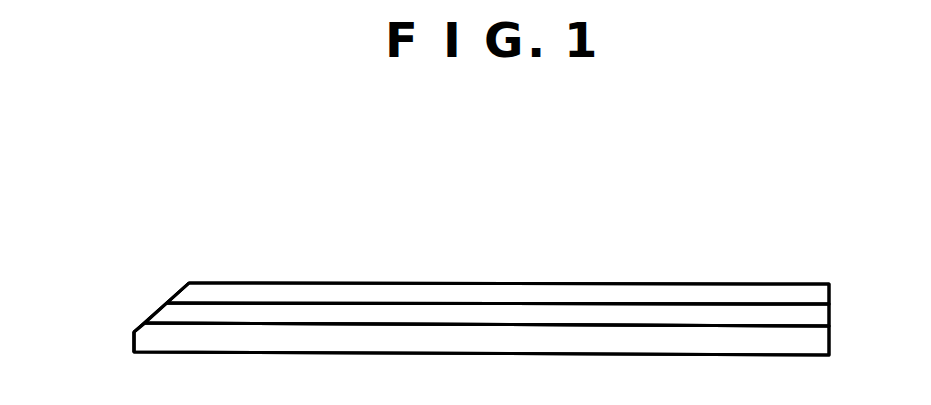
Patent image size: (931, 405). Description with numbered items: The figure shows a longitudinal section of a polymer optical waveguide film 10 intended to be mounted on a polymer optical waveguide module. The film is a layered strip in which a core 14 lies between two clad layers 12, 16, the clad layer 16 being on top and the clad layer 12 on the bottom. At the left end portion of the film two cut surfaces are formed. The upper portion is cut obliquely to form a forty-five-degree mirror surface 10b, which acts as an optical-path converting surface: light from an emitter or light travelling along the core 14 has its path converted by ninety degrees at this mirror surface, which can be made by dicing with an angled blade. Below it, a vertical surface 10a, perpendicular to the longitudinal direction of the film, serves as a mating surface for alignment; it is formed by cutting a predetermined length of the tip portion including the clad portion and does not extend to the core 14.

The polymer optical waveguide film 10 is at (688, 265).
The vertical surface 10a is at (134, 343).
The 45° mirror surface 10b is at (164, 305).
The clad layer 12 is at (821, 338).
The core 14 is at (820, 317).
The clad layer 16 is at (821, 295).